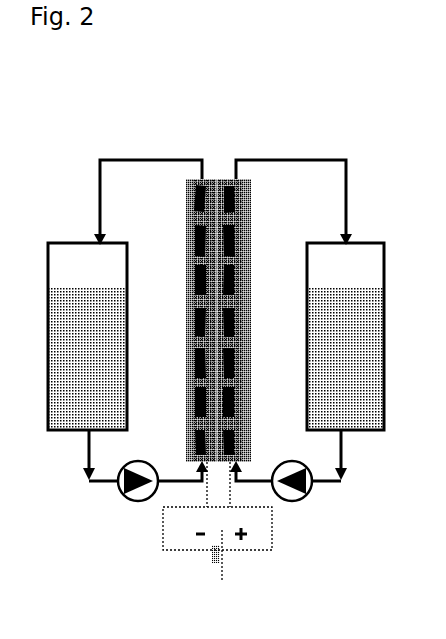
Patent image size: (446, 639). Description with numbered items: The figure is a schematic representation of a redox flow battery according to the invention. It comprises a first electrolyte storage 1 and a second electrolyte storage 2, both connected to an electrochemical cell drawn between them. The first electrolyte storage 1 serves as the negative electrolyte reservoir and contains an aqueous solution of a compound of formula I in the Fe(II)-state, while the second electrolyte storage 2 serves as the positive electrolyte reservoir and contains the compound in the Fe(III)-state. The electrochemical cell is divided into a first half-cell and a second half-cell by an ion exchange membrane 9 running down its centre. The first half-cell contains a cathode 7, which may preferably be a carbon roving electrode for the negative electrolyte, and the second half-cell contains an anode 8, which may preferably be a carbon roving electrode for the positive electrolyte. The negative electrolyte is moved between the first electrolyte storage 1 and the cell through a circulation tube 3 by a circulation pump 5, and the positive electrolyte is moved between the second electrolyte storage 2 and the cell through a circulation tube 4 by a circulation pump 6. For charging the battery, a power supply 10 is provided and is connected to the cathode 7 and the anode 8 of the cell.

The first electrolyte storage 1 is at (87, 336).
The second electrolyte storage 2 is at (345, 336).
The circulation tube 3 is at (156, 158).
The circulation tube 4 is at (290, 153).
The circulation pump 5 is at (140, 463).
The circulation pump 6 is at (292, 460).
The cathode 7 is at (187, 236).
The anode 8 is at (250, 239).
The ion exchange membrane 9 is at (217, 180).
The power supply 10 is at (230, 570).